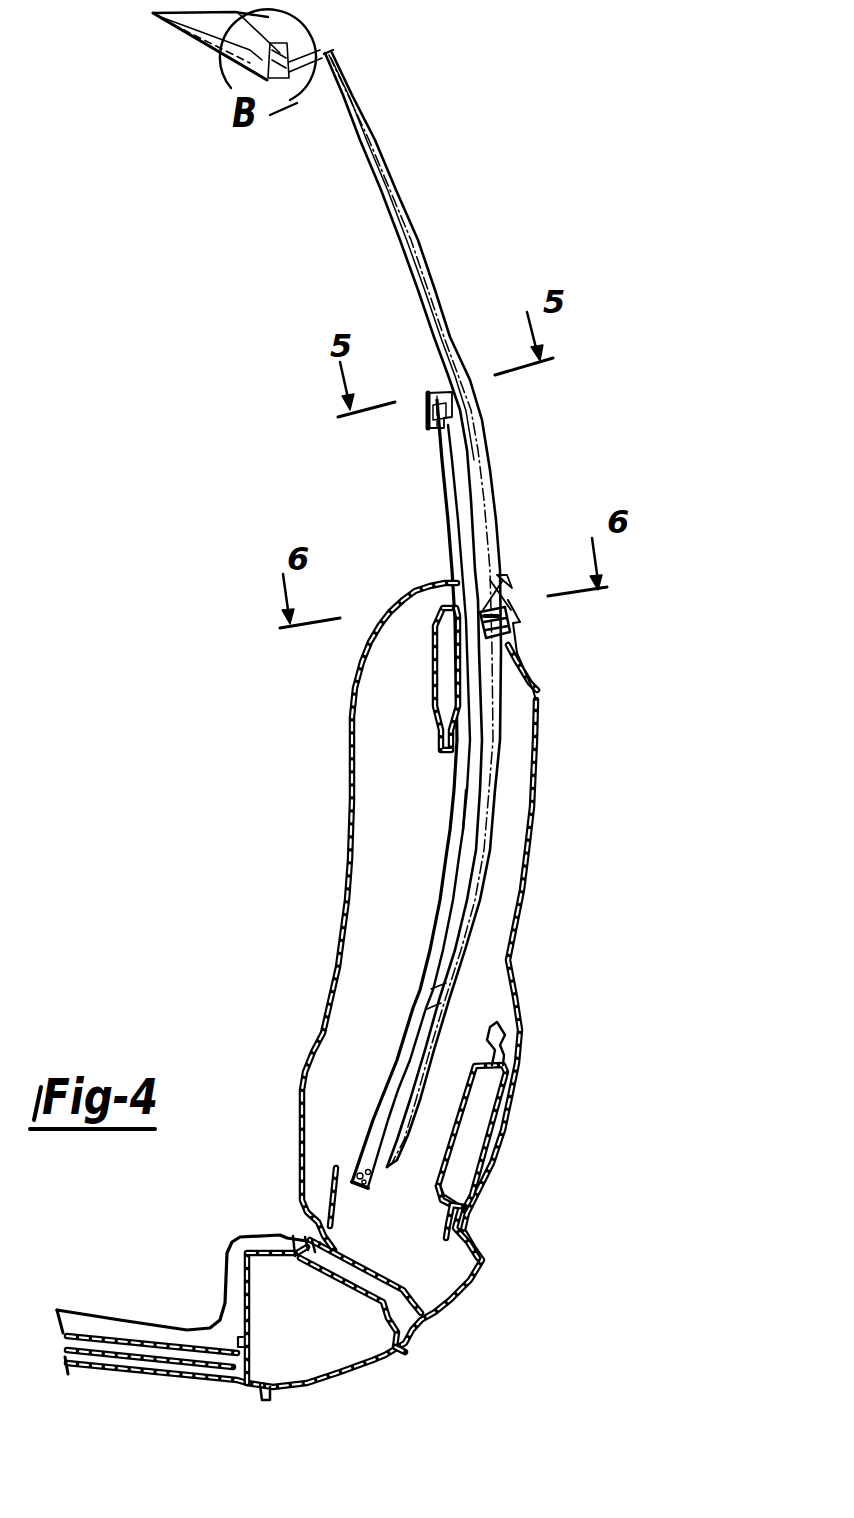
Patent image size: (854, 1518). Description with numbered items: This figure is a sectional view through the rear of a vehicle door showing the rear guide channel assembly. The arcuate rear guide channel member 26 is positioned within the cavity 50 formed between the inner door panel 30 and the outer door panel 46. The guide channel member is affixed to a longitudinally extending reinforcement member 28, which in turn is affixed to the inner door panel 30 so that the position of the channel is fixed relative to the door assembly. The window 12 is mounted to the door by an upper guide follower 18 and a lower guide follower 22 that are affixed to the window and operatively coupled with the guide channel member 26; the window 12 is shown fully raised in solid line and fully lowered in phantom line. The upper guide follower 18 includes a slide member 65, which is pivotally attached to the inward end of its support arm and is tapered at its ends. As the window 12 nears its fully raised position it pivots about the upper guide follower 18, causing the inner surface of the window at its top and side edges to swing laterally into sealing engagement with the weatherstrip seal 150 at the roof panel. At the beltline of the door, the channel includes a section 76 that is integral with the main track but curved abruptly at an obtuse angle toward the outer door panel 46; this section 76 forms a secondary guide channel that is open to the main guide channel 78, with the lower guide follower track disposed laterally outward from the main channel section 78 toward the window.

The window 12 is at (377, 173).
The upper guide follower 18 is at (450, 387).
The lower guide follower 22 is at (503, 588).
The rear guide channel member 26 is at (436, 850).
The reinforcement member 28 is at (437, 652).
The inner door panel 30 is at (372, 634).
The outer door panel 46 is at (532, 833).
The cavity 50 is at (408, 956).
The slide member 65 is at (430, 423).
The section 76 is at (507, 627).
The main channel section 78 is at (456, 793).
The weatherstrip seal 150 is at (296, 94).